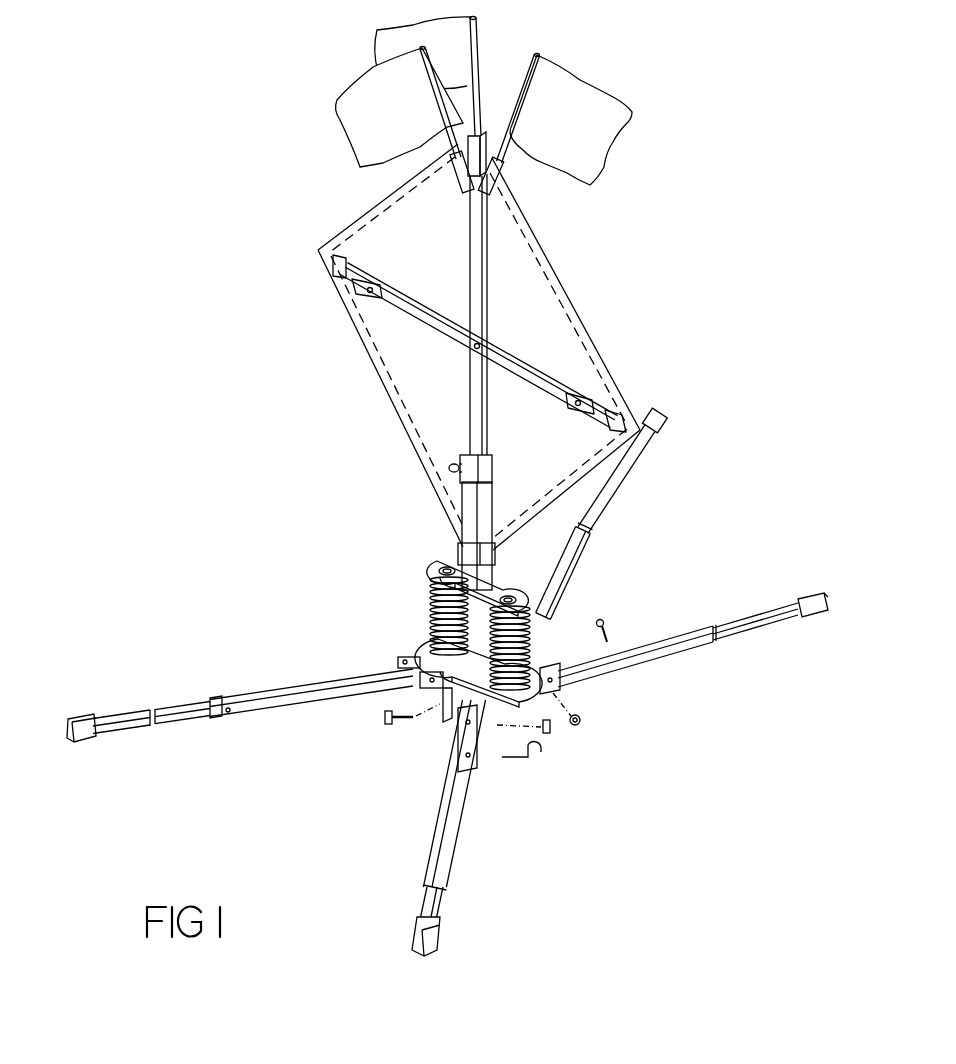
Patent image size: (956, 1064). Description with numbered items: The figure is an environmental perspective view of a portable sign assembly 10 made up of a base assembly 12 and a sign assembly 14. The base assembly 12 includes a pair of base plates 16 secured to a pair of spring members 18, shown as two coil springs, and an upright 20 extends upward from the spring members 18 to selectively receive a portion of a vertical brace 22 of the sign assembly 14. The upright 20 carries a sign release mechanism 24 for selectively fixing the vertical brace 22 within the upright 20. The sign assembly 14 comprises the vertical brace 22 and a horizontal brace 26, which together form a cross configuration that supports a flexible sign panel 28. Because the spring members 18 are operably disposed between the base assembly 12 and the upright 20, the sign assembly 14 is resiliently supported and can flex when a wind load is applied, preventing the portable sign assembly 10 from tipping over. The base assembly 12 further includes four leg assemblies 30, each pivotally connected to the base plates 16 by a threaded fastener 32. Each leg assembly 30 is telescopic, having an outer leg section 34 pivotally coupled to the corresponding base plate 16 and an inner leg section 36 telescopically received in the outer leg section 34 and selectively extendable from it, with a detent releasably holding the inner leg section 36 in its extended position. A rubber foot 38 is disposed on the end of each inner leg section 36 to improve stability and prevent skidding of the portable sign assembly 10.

The portable sign assembly 10 is at (352, 392).
The base assembly 12 is at (340, 660).
The sign assembly 14 is at (588, 272).
The base plates 16 is at (425, 650).
The spring members 18 is at (432, 588).
The upright 20 is at (490, 500).
The vertical brace 22 is at (480, 230).
The sign release mechanism 24 is at (457, 460).
The horizontal brace 26 is at (545, 378).
The flexible sign panel 28 is at (378, 230).
The leg assemblies 30 is at (645, 490).
The threaded fastener 32 is at (601, 620).
The outer leg section 34 is at (572, 555).
The inner leg section 36 is at (660, 446).
The rubber foot 38 is at (664, 424).